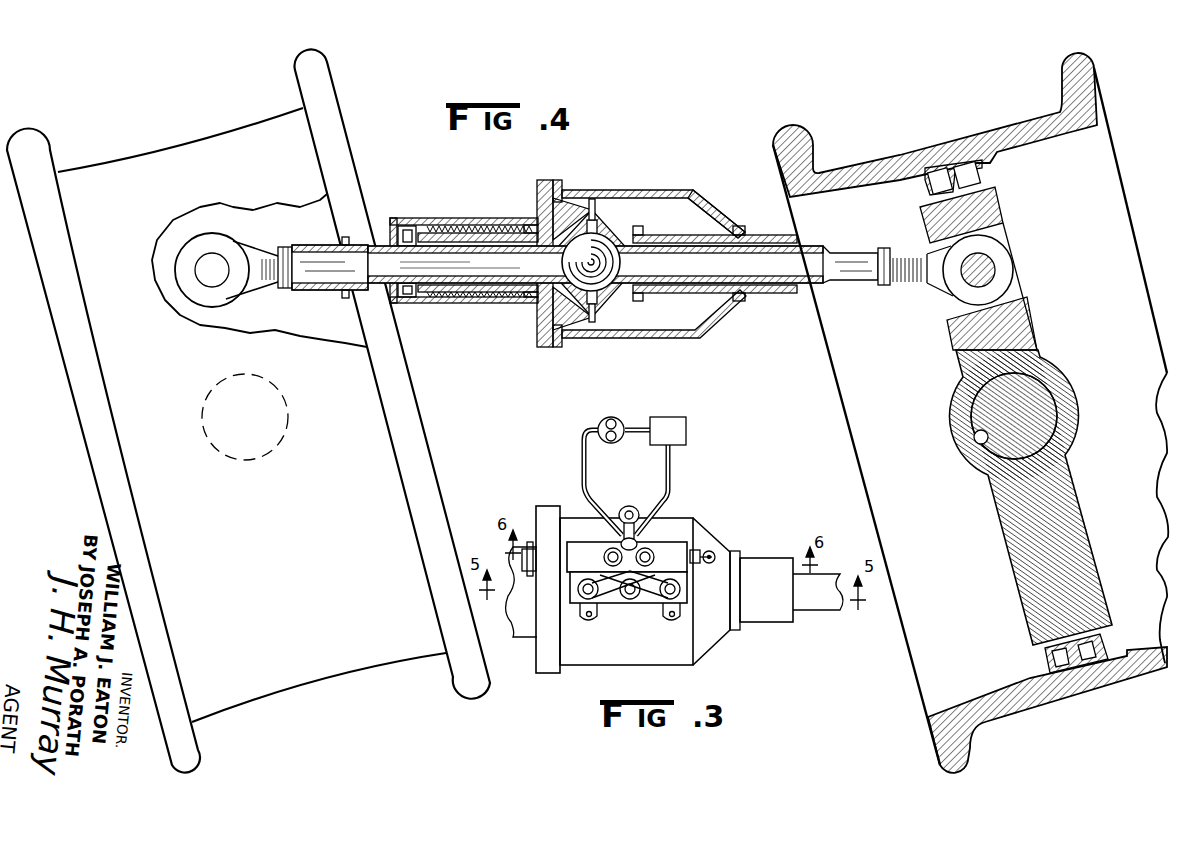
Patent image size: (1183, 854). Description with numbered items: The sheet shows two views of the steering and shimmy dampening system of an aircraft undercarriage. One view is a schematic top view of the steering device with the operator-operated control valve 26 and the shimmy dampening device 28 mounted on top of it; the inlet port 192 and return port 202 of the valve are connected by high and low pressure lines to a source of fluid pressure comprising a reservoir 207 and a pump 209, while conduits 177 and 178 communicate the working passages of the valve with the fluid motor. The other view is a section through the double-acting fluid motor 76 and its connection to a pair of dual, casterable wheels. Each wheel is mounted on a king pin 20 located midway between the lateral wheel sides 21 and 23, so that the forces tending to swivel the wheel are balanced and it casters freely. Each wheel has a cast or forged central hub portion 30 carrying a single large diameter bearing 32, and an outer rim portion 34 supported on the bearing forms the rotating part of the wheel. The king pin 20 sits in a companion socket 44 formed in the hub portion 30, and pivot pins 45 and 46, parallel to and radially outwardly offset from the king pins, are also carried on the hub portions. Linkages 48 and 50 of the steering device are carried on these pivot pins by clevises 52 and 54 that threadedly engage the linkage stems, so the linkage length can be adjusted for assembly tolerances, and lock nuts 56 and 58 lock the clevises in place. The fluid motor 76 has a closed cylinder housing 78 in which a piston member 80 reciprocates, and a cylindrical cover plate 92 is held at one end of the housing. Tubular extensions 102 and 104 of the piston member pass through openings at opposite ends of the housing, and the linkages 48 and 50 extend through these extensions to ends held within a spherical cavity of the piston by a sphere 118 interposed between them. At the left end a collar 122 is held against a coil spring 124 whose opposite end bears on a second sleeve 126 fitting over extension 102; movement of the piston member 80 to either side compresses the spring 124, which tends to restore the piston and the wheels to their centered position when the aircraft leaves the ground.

In FIG. 4, the king pin 20 is at (1043, 405).
In FIG. 4, the lateral wheel side 21 is at (838, 385).
In FIG. 4, the lateral wheel side 23 is at (1140, 247).
In FIG. 3, the operator-operated control valve 26 is at (585, 548).
In FIG. 3, the shimmy dampening device 28 is at (648, 598).
In FIG. 4, the central hub portion 30 is at (1073, 519).
In FIG. 4, the bearing 32 is at (985, 172).
In FIG. 4, the outer rim portion 34 is at (987, 131).
In FIG. 4, the socket 44 is at (986, 437).
In FIG. 4, the pivot pin 45 is at (203, 268).
In FIG. 4, the pivot pin 46 is at (983, 272).
In FIG. 4, the linkage 48 is at (357, 255).
In FIG. 4, the linkage 50 is at (830, 257).
In FIG. 4, the clevis 52 is at (226, 290).
In FIG. 4, the clevis 54 is at (955, 287).
In FIG. 4, the lock nut 56 is at (284, 244).
In FIG. 4, the lock nut 58 is at (887, 287).
In FIG. 4, the double-acting fluid motor 76 is at (713, 325).
In FIG. 3, the double-acting fluid motor 76 is at (703, 643).
In FIG. 4, the cylinder housing 78 is at (710, 210).
In FIG. 4, the piston member 80 is at (618, 300).
In FIG. 4, the cylindrical cover plate 92 is at (513, 302).
In FIG. 4, the tubular extension 102 is at (478, 300).
In FIG. 4, the tubular extension 104 is at (775, 297).
In FIG. 4, the sphere 118 is at (633, 231).
In FIG. 4, the collar 122 is at (410, 228).
In FIG. 4, the coil spring 124 is at (430, 303).
In FIG. 4, the second sleeve 126 is at (462, 226).
In FIG. 3, the conduit 177 is at (610, 582).
In FIG. 3, the conduit 178 is at (687, 573).
In FIG. 3, the inlet port 192 is at (637, 540).
In FIG. 3, the return port 202 is at (627, 506).
In FIG. 3, the reservoir 207 is at (686, 440).
In FIG. 3, the pump 209 is at (620, 418).